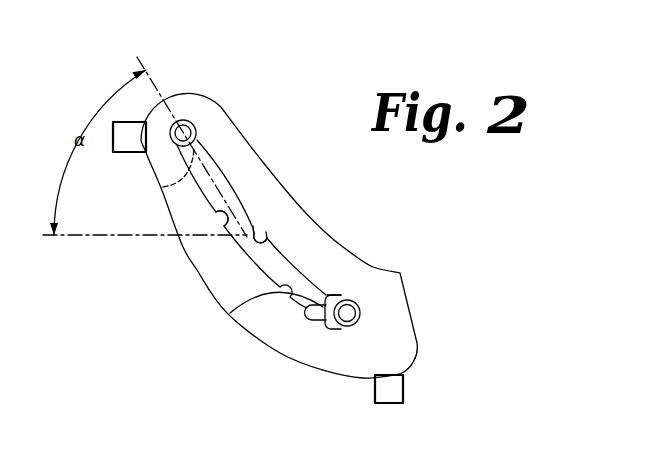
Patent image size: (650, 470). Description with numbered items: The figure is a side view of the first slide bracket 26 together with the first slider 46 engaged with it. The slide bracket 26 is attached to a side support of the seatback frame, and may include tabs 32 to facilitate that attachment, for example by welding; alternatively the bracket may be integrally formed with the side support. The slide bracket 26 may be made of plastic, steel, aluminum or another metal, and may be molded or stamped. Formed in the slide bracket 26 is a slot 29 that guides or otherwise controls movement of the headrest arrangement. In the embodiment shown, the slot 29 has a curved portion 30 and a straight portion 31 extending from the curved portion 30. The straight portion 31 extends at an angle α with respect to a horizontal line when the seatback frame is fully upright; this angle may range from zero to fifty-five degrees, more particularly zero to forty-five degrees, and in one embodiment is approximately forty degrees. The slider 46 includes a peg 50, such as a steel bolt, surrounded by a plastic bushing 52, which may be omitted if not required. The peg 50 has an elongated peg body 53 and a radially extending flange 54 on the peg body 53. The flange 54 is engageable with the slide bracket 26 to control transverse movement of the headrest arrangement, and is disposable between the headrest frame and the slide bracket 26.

The first slide bracket 26 is at (231, 120).
The slot 29 is at (268, 240).
The curved portion 30 is at (230, 313).
The straight portion 31 is at (222, 228).
The tabs 32 is at (123, 121).
The first slider 46 is at (163, 187).
The peg 50 is at (351, 323).
The bushing 52 is at (330, 328).
The peg body 53 is at (347, 313).
The flange 54 is at (327, 294).